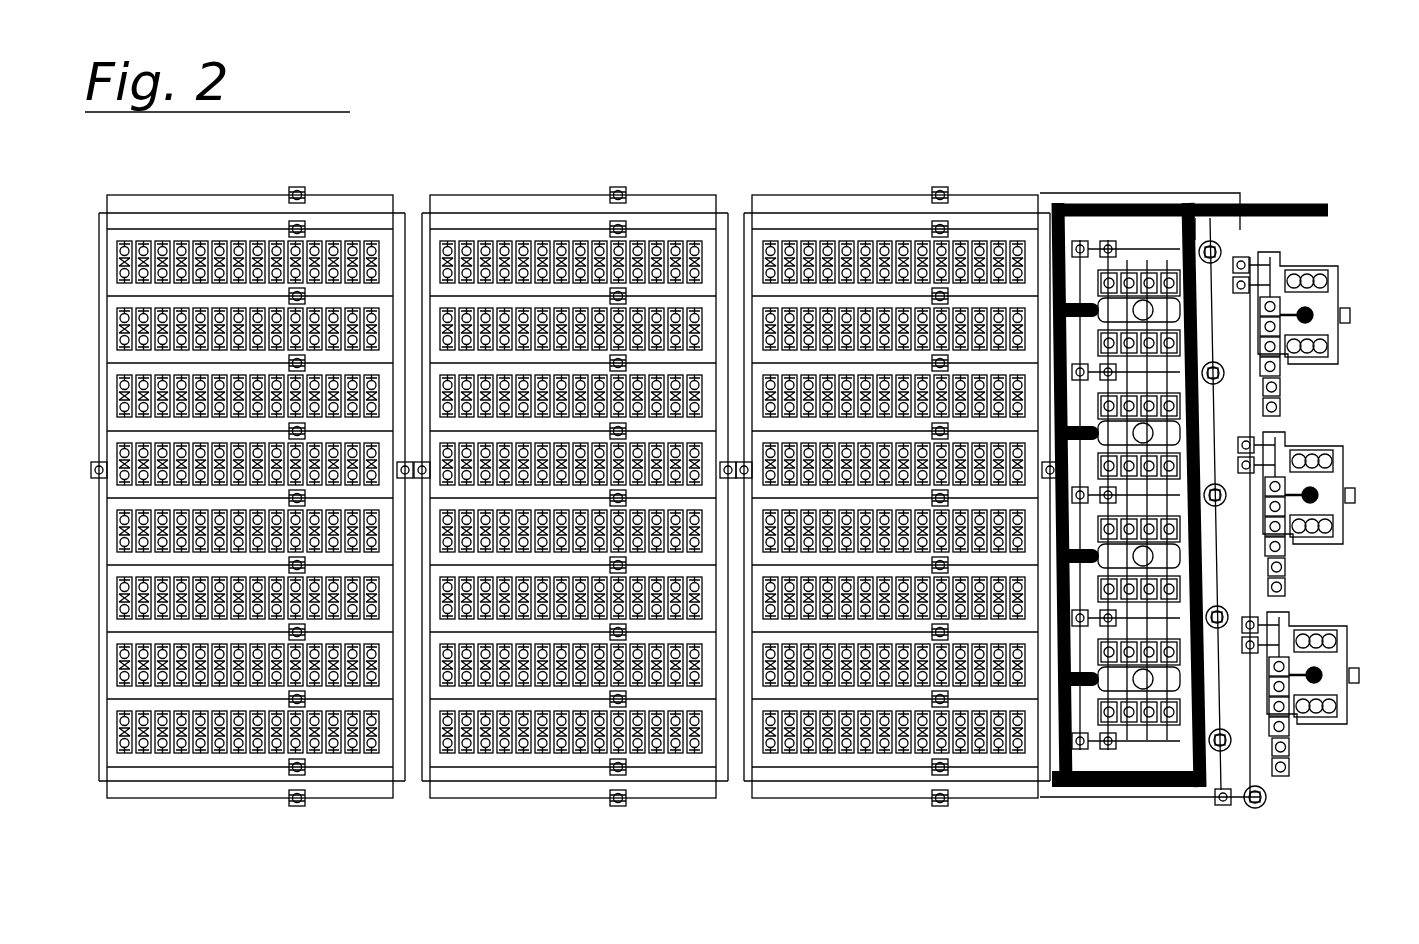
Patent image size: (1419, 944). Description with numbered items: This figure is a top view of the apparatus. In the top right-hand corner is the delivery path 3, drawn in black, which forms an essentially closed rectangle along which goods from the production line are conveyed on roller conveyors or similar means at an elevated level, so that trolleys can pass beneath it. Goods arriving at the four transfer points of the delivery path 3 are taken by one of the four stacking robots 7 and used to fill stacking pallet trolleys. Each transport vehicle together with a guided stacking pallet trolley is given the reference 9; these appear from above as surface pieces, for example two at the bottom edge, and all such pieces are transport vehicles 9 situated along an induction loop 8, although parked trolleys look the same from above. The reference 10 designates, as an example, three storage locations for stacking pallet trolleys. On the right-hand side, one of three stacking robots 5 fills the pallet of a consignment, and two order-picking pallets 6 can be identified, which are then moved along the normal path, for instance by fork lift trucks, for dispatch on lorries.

The delivery path 3 is at (1278, 203).
The stacking robot 5 is at (1312, 312).
The order-picking pallet 6 is at (1333, 525).
The stacking robot 7 is at (1150, 690).
The induction loop 8 is at (890, 225).
The transport vehicle with stacking pallet trolley 9 is at (957, 770).
The storage locations 10 is at (837, 743).